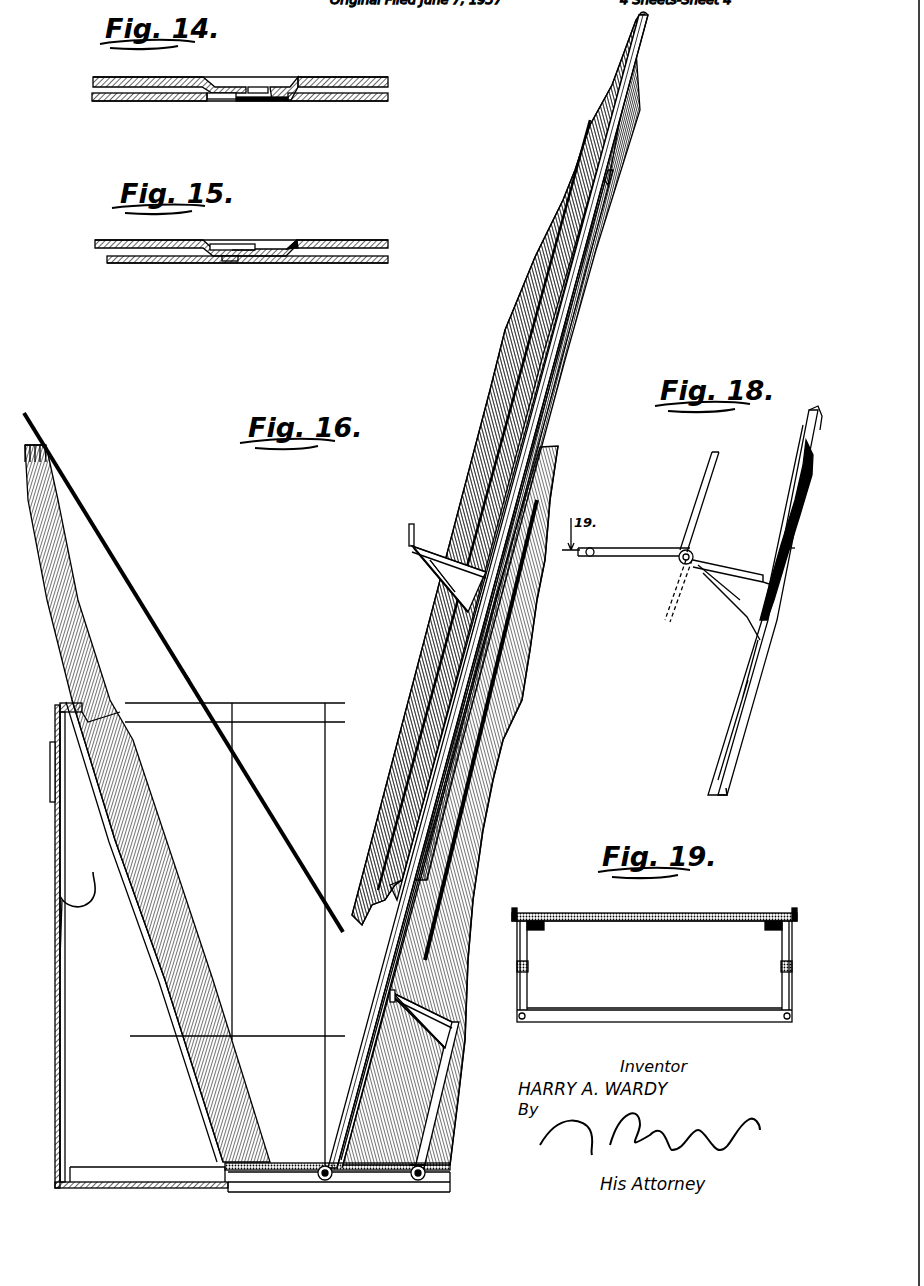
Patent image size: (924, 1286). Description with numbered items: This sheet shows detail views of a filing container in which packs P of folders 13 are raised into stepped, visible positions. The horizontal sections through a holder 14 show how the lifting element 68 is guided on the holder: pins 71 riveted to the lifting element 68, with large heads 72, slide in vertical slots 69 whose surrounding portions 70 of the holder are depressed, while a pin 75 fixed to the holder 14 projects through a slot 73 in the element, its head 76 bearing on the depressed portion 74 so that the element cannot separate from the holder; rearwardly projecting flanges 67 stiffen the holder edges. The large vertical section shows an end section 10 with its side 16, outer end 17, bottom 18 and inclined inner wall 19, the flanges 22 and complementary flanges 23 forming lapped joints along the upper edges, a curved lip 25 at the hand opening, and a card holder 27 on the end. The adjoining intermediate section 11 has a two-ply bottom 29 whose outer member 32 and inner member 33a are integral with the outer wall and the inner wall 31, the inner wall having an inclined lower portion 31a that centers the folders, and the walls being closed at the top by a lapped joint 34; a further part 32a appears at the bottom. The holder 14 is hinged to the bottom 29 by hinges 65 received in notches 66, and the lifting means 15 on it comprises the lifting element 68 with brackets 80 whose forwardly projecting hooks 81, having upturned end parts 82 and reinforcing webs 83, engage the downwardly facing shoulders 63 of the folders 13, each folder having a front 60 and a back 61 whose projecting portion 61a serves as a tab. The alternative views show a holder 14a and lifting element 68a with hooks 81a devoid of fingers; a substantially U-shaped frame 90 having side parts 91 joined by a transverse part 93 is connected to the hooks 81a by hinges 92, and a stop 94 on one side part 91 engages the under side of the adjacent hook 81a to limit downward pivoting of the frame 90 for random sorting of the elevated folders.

In FIG. 16, the end section 10 is at (51, 1021).
In FIG. 16, the intermediate section 11 is at (354, 696).
In FIG. 16, the folder 13 is at (197, 673).
In FIG. 14, the holder 14 is at (290, 76).
In FIG. 15, the holder 14 is at (364, 236).
In FIG. 16, the holder 14 is at (375, 969).
In FIG. 18, the holder 14a is at (709, 765).
In FIG. 16, the lifting means 15 is at (432, 558).
In FIG. 16, the side 16 is at (97, 943).
In FIG. 16, the outer end 17 is at (56, 1043).
In FIG. 16, the bottom 18 is at (132, 1180).
In FIG. 16, the inner wall 19 is at (185, 1037).
In FIG. 16, the flange 22 is at (68, 703).
In FIG. 16, the complementary flange 23 is at (82, 713).
In FIG. 16, the lip 25 is at (95, 896).
In FIG. 16, the card holder 27 is at (52, 764).
In FIG. 16, the bottom 29 is at (296, 1183).
In FIG. 16, the inner wall 31 is at (278, 934).
In FIG. 16, the inclined lower portion 31a is at (263, 1067).
In FIG. 16, the outer bottom member 32 is at (322, 1180).
In FIG. 16, the base flange 32a is at (258, 1176).
In FIG. 16, the inner bottom member 33a is at (300, 1163).
In FIG. 16, the lapped joint 34 is at (278, 710).
In FIG. 16, the front 60 is at (180, 648).
In FIG. 16, the back 61 is at (425, 640).
In FIG. 16, the upwardly projecting portion 61a is at (50, 452).
In FIG. 16, the shoulder 63 is at (448, 562).
In FIG. 16, the hinge 65 is at (416, 1180).
In FIG. 16, the notch 66 is at (425, 1178).
In FIG. 14, the flange 67 is at (334, 80).
In FIG. 15, the flange 67 is at (334, 240).
In FIG. 16, the flange 67 is at (402, 942).
In FIG. 14, the lifting element 68 is at (336, 102).
In FIG. 15, the lifting element 68 is at (336, 264).
In FIG. 16, the lifting element 68 is at (558, 356).
In FIG. 18, the lifting element 68a is at (808, 432).
In FIG. 19, the lifting element 68a is at (672, 922).
In FIG. 15, the slot 69 is at (238, 262).
In FIG. 15, the depressed portion 70 is at (281, 248).
In FIG. 15, the pin 71 is at (242, 250).
In FIG. 15, the head 72 is at (222, 246).
In FIG. 14, the slot 73 is at (266, 101).
In FIG. 14, the depressed portion 74 is at (220, 99).
In FIG. 14, the pin 75 is at (258, 94).
In FIG. 14, the head 76 is at (282, 96).
In FIG. 16, the bracket 80 is at (468, 620).
In FIG. 16, the hook 81 is at (410, 548).
In FIG. 18, the lifting hook 81a is at (742, 580).
In FIG. 19, the lifting hook 81a is at (528, 945).
In FIG. 16, the upturned end part 82 is at (405, 527).
In FIG. 16, the web 83 is at (440, 574).
In FIG. 18, the frame 90 is at (614, 576).
In FIG. 19, the frame 90 is at (707, 1008).
In FIG. 18, the side part 91 is at (712, 490).
In FIG. 19, the side part 91 is at (526, 988).
In FIG. 18, the hinge 92 is at (680, 556).
In FIG. 19, the hinge 92 is at (530, 968).
In FIG. 18, the transverse part 93 is at (586, 560).
In FIG. 19, the transverse part 93 is at (648, 1010).
In FIG. 18, the stop 94 is at (695, 575).
In FIG. 16, the pack P is at (524, 762).